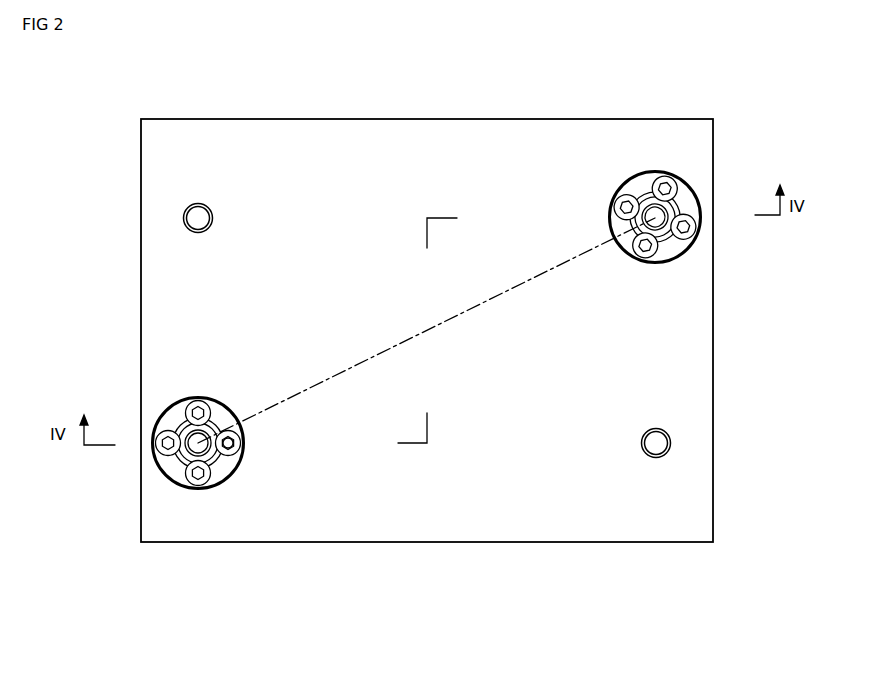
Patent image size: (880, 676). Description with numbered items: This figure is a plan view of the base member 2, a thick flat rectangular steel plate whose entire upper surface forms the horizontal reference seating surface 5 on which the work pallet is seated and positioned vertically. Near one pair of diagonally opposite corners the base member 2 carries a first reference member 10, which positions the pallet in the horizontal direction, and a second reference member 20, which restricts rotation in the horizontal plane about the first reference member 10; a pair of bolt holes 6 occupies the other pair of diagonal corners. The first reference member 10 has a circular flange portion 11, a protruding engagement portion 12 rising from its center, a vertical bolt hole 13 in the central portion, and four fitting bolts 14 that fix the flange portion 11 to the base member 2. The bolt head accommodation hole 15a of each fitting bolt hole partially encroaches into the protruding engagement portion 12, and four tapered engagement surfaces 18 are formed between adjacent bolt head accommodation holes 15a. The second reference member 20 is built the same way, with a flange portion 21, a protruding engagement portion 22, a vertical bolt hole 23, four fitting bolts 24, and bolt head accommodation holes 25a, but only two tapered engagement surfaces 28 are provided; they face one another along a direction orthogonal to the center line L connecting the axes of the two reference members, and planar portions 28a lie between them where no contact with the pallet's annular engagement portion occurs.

The base member 2 is at (466, 118).
The reference seating surface 5 is at (660, 395).
The bolt holes 6 is at (213, 218).
The first reference member 10 is at (218, 444).
The flange portion 11 is at (194, 475).
The protruding engagement portion 12 is at (214, 477).
The vertical bolt hole 13 is at (161, 483).
The fitting bolts 14 is at (248, 480).
The bolt head accommodation hole 15a is at (257, 435).
The tapered engagement surfaces 18 is at (217, 427).
The second reference member 20 is at (651, 231).
The flange portion 21 is at (655, 217).
The protruding engagement portion 22 is at (654, 216).
The vertical bolt hole 23 is at (692, 265).
The fitting bolts 24 is at (588, 212).
The bolt head accommodation hole 25a is at (627, 282).
The tapered engagement surfaces 28 is at (655, 217).
The planar portions 28a is at (648, 224).
The center line L is at (310, 387).